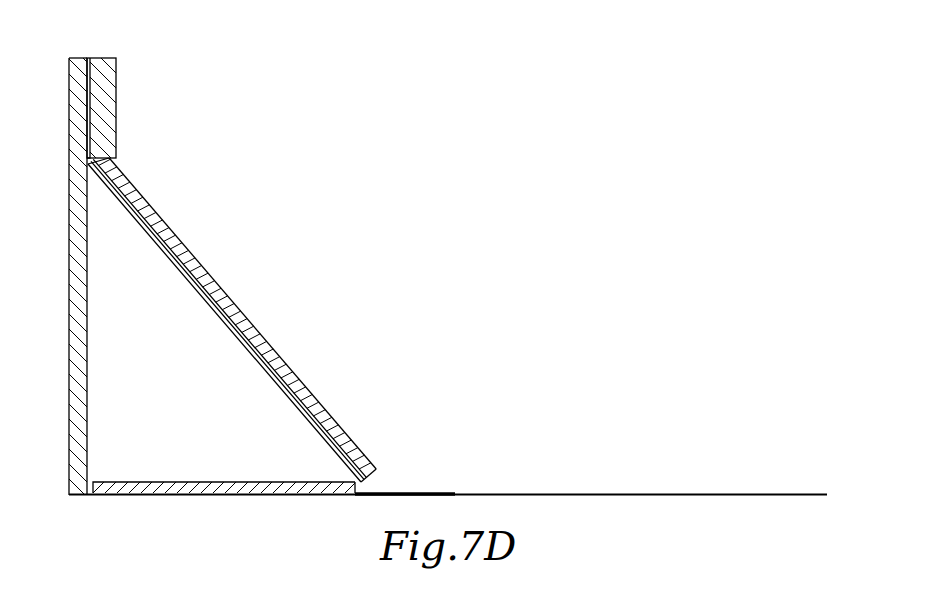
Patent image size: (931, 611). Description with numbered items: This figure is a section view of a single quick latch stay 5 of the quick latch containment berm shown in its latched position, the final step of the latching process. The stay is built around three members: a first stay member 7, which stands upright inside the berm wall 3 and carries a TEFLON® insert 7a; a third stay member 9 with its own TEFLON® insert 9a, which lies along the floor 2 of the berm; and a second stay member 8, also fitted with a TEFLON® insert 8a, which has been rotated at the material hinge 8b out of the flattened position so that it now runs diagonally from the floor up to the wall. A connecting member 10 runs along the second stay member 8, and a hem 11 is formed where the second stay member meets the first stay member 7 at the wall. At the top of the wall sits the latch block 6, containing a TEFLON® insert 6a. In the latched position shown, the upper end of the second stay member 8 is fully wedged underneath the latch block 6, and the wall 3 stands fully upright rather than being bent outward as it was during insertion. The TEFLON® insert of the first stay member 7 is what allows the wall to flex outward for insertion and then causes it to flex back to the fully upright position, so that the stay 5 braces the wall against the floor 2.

The floor 2 is at (648, 495).
The end wall 3 is at (87, 402).
The quick latch stay 5 is at (68, 84).
The latch block 6 is at (117, 128).
The TEFLON® insert 6a is at (103, 91).
The first stay member 7 is at (68, 388).
The TEFLON® insert 7a is at (69, 288).
The second stay member 8 is at (232, 306).
The TEFLON® insert 8a is at (270, 349).
The material hinge 8b is at (377, 490).
The third stay member 9 is at (240, 484).
The TEFLON® insert 9a is at (356, 496).
The connecting member 10 is at (175, 272).
The hem 11 is at (88, 192).